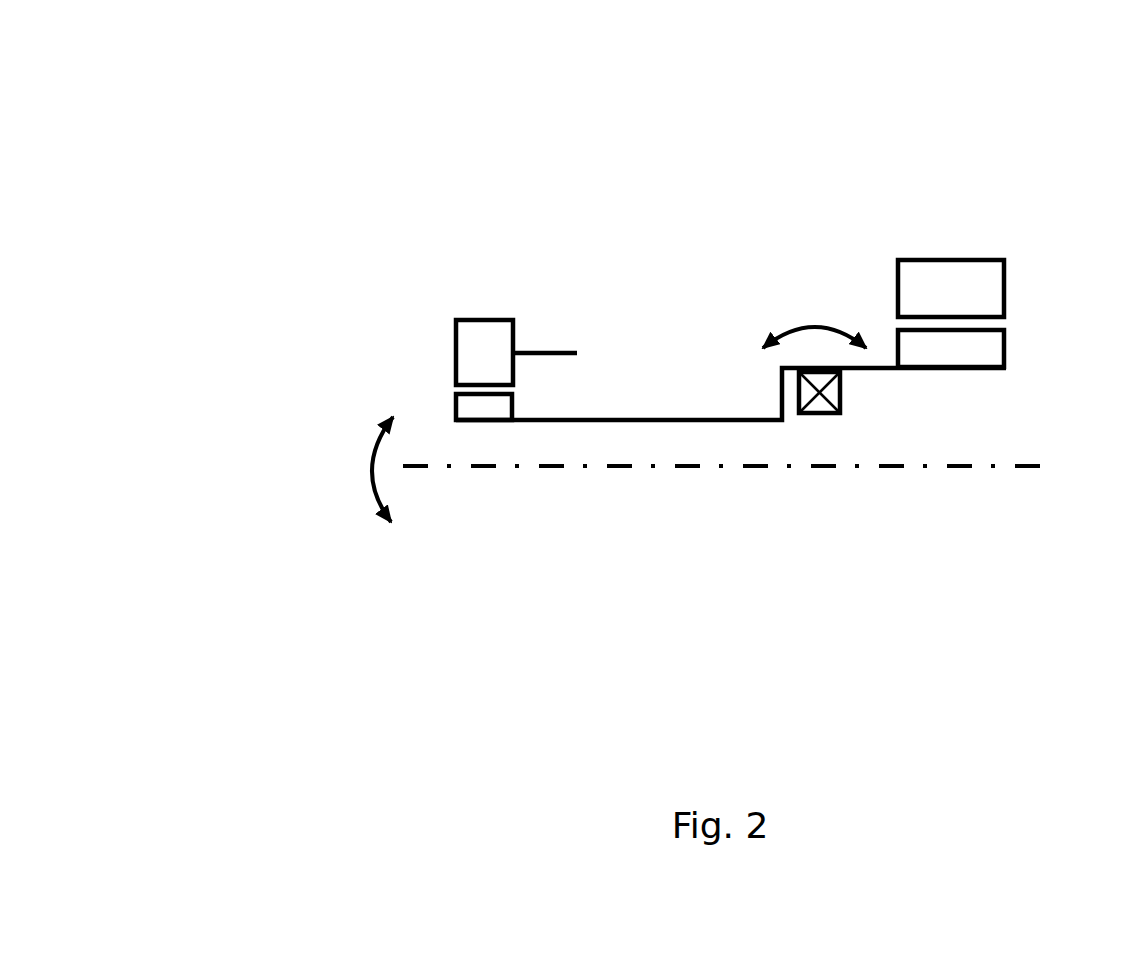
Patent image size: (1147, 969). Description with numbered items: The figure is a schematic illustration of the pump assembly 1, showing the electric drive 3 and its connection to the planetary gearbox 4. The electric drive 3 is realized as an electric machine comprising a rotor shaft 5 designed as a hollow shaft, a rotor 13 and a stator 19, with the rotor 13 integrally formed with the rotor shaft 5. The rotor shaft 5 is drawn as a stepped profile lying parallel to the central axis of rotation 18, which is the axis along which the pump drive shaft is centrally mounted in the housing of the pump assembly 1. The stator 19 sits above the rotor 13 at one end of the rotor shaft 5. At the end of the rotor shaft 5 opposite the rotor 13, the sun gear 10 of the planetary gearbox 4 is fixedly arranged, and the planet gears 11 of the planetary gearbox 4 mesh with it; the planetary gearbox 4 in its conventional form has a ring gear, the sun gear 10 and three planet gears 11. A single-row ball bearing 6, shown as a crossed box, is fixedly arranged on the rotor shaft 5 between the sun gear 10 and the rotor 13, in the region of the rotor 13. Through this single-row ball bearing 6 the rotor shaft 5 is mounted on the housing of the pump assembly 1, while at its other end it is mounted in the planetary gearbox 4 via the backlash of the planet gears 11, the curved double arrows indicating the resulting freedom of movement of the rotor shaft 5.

The pump assembly 1 is at (277, 153).
The electric drive 3 is at (1026, 365).
The planetary gearbox 4 is at (420, 373).
The rotor shaft 5 is at (566, 424).
The single-row ball bearing 6 is at (822, 406).
The sun gear 10 is at (494, 406).
The planet gears 11 is at (493, 349).
The rotor 13 is at (972, 350).
The central axis of rotation 18 is at (939, 460).
The stator 19 is at (928, 292).